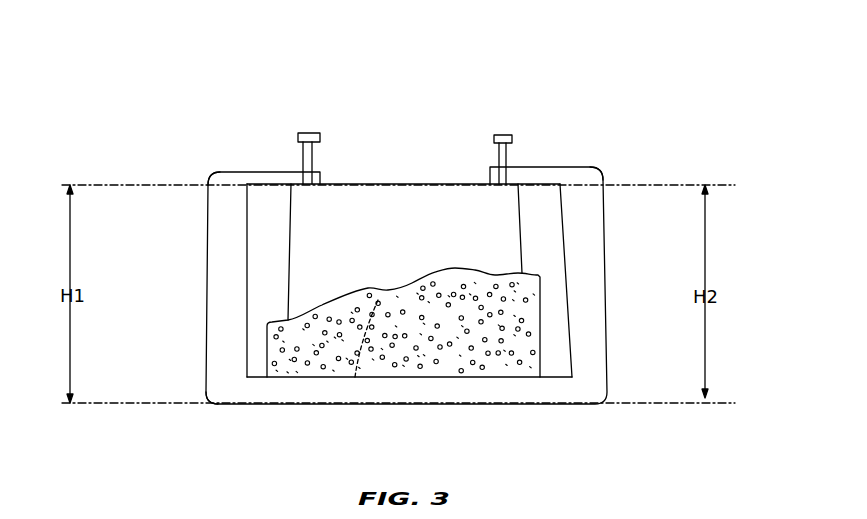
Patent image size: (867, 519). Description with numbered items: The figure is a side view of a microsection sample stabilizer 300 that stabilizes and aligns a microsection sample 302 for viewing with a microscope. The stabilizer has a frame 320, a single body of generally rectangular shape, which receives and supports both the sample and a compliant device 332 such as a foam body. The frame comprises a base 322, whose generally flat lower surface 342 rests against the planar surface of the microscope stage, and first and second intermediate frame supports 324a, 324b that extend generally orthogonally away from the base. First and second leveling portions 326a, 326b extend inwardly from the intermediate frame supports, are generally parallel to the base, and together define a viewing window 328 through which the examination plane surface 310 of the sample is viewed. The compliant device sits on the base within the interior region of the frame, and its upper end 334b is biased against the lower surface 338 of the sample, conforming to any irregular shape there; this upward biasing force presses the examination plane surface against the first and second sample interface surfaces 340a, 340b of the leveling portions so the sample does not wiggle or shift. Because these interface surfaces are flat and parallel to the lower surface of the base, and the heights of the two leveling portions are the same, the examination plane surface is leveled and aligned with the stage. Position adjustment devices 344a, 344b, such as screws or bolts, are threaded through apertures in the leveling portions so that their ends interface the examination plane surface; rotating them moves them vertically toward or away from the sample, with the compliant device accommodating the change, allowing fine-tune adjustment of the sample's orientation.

The microsection sample stabilizer 300 is at (205, 45).
The microsection sample 302 is at (390, 205).
The examination plane surface 310 is at (437, 181).
The frame 320 is at (612, 172).
The base 322 is at (297, 383).
The first intermediate frame support 324a is at (220, 280).
The second intermediate frame support 324b is at (588, 245).
The first leveling portion 326a is at (290, 184).
The second leveling portion 326b is at (520, 183).
The viewing window 328 is at (401, 165).
The compliant device 332 is at (520, 364).
The upper end of the compliant device 334b is at (355, 380).
The lower surface of the microsection sample 338 is at (497, 285).
The first sample interface surface 340a is at (265, 195).
The second sample interface surface 340b is at (540, 196).
The lower surface of the base 342 is at (228, 409).
The first position adjustment device 344a is at (302, 133).
The second position adjustment device 344b is at (503, 128).